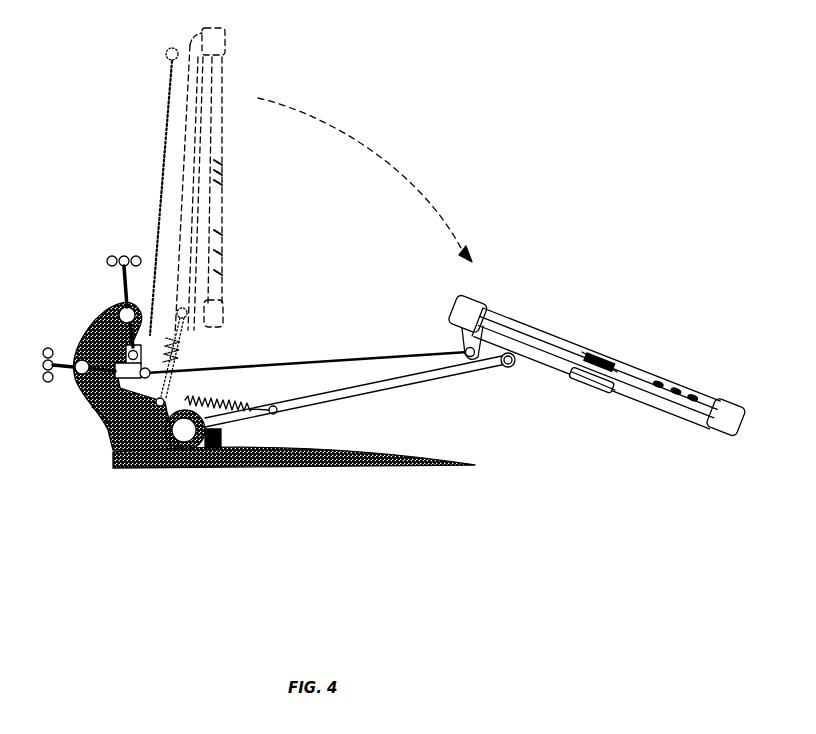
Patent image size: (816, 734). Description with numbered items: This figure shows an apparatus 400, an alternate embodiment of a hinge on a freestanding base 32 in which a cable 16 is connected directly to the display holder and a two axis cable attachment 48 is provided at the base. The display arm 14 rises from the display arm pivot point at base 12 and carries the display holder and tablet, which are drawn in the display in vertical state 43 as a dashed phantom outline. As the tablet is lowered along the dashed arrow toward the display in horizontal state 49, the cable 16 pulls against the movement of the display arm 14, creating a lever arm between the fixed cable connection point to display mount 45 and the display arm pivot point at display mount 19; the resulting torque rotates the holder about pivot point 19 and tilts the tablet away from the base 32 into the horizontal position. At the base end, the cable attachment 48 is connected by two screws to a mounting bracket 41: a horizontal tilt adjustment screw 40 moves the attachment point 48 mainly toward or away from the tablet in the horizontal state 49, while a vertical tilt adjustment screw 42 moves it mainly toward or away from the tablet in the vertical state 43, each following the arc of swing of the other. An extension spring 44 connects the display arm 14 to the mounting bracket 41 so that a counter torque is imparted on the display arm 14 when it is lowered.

The apparatus 400 is at (422, 115).
The display in vertical state 43 is at (125, 125).
The vertical tilt adjustment screw 42 is at (118, 292).
The mounting bracket for tilt screws 41 is at (92, 317).
The horizontal tilt adjustment screw 40 is at (63, 373).
The two axis cable attachment 48 is at (92, 407).
The extension spring 44 is at (215, 397).
The cable 16 is at (287, 368).
The display arm 14 is at (324, 392).
The display arm pivot point at base 12 is at (210, 432).
The freestanding base 32 is at (318, 445).
The fixed cable connection point to display mount 45 is at (462, 342).
The display arm pivot point at display mount 19 is at (507, 367).
The display in horizontal state 49 is at (607, 277).